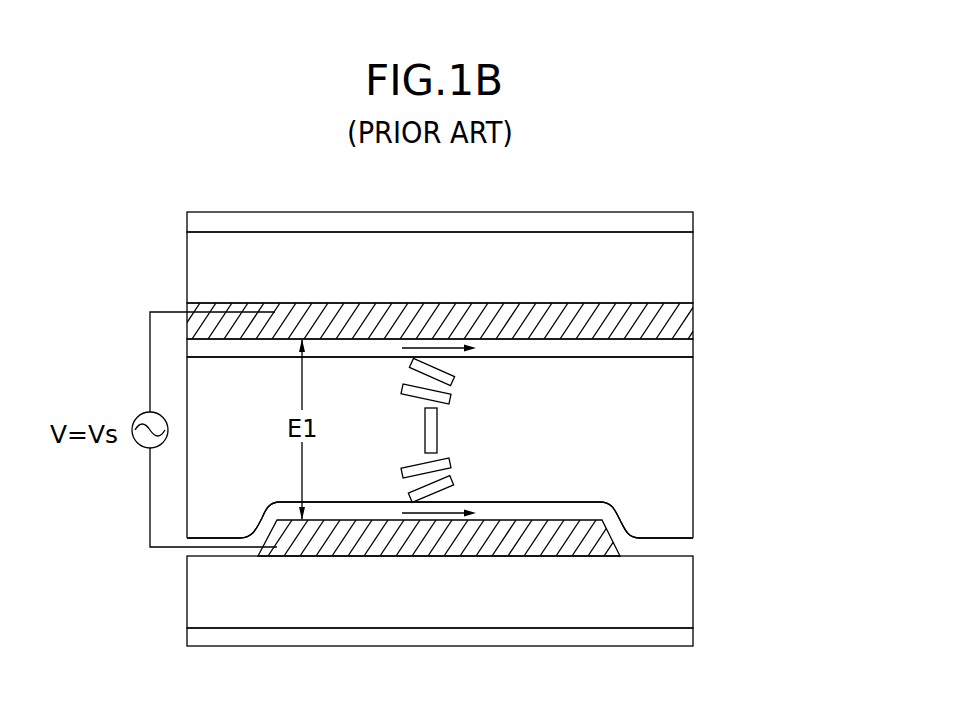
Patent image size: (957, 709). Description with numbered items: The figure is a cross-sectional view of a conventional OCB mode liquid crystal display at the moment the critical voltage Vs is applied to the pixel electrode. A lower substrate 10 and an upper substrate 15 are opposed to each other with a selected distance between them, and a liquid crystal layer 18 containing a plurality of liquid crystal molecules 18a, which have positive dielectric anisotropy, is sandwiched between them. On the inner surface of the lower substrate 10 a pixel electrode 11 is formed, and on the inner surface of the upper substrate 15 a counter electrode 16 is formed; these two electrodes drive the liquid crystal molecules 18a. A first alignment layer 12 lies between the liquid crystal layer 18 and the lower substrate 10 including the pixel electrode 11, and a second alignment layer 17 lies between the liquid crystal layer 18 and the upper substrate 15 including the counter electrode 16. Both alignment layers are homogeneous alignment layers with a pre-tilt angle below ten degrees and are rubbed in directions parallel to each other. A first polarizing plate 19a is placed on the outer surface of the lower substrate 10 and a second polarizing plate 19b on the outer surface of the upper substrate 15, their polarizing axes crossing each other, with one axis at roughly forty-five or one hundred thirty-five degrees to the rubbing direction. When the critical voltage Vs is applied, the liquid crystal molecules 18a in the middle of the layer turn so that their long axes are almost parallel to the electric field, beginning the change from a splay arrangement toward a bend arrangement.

The second polarizing plate 19b is at (680, 224).
The upper substrate 15 is at (680, 268).
The counter electrode 16 is at (680, 313).
The second alignment layer 17 is at (680, 351).
The liquid crystal molecules 18a is at (448, 398).
The liquid crystal layer 18 is at (678, 436).
The pixel electrode 11 is at (593, 540).
The first alignment layer 12 is at (680, 549).
The lower substrate 10 is at (680, 597).
The first polarizing plate 19a is at (680, 639).